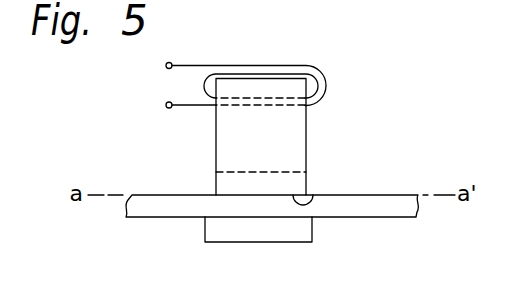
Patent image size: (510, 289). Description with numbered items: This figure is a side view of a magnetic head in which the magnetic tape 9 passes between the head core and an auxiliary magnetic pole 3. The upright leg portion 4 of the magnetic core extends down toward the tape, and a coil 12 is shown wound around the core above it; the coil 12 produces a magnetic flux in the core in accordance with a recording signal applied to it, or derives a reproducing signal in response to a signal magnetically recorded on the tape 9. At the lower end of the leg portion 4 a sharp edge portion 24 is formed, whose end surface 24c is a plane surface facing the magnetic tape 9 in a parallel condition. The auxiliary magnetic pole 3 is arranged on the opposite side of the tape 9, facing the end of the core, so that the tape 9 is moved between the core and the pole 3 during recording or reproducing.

The coil 12 is at (185, 106).
The leg portion 4 is at (297, 140).
The sharp edge portion 24 is at (305, 173).
The end surface 24c is at (313, 196).
The magnetic tape 9 is at (386, 211).
The auxiliary magnetic pole 3 is at (295, 231).